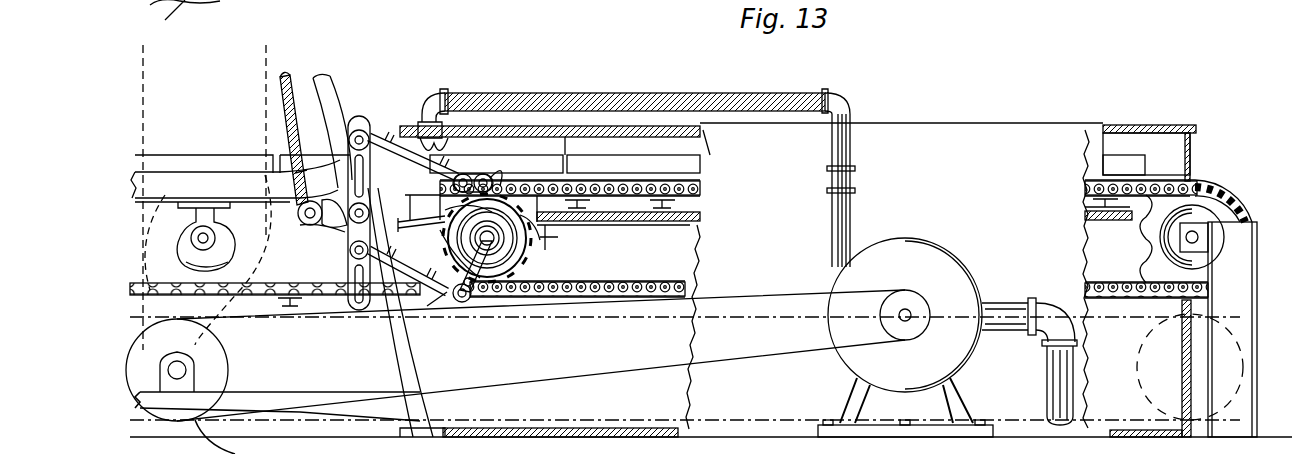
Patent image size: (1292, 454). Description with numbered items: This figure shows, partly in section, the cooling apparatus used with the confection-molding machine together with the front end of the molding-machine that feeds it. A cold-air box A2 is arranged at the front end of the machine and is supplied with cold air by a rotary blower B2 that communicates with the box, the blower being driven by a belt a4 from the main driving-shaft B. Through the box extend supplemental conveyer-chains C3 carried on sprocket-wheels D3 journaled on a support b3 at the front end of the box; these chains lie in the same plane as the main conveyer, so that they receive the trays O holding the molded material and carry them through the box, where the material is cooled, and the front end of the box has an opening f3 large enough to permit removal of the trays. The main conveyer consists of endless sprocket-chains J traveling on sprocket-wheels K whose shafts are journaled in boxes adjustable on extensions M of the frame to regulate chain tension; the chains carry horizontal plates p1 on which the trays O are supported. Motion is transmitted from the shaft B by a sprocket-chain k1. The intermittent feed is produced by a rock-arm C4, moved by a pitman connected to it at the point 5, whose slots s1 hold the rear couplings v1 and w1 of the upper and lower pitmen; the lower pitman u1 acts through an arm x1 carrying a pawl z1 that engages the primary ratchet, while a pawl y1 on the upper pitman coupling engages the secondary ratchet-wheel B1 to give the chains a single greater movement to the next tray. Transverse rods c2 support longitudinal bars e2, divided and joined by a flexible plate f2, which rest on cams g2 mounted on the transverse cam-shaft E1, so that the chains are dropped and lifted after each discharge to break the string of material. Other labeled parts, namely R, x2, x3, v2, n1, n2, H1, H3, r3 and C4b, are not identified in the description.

The air supply pipe x3 is at (424, 122).
The tray O is at (1153, 157).
The longitudinal bar e2 is at (180, 203).
The flexible plate f2 is at (186, 240).
The transverse shaft E1 is at (216, 242).
The cam g2 is at (222, 264).
The rock-arm C4 is at (336, 243).
The horizontal plate p1 is at (292, 303).
The connection point 5 is at (296, 225).
The path arc n2 is at (290, 250).
The belt pulley H3 is at (205, 370).
The sprocket-chain k1 is at (262, 50).
The arm n1 is at (195, 345).
The main driving-shaft B is at (277, 396).
The endless sprocket-chain J is at (322, 322).
The belt a4 is at (541, 355).
The lever arm x2 is at (290, 78).
The slot s1 is at (352, 270).
The standard R is at (428, 343).
The coupling v1 is at (378, 160).
The roller carriage v2 is at (472, 175).
The pawl y1 is at (498, 178).
The lower pitman u1 is at (407, 273).
The coupling w1 is at (437, 306).
The pawl z1 is at (470, 300).
The extension M is at (421, 232).
The rod c2 is at (412, 203).
The sprocket-wheel K is at (538, 263).
The arm x1 is at (480, 271).
The shaft H1 is at (500, 300).
The secondary ratchet-wheel B1 is at (525, 300).
The stop r3 is at (554, 237).
The supplemental conveyer-chain C3 is at (605, 205).
The lower chain C4b is at (642, 312).
The rotary blower B2 is at (955, 270).
The box A2 is at (946, 192).
The support b3 is at (1208, 318).
The opening f3 is at (1192, 165).
The sprocket-wheel D3 is at (1142, 254).